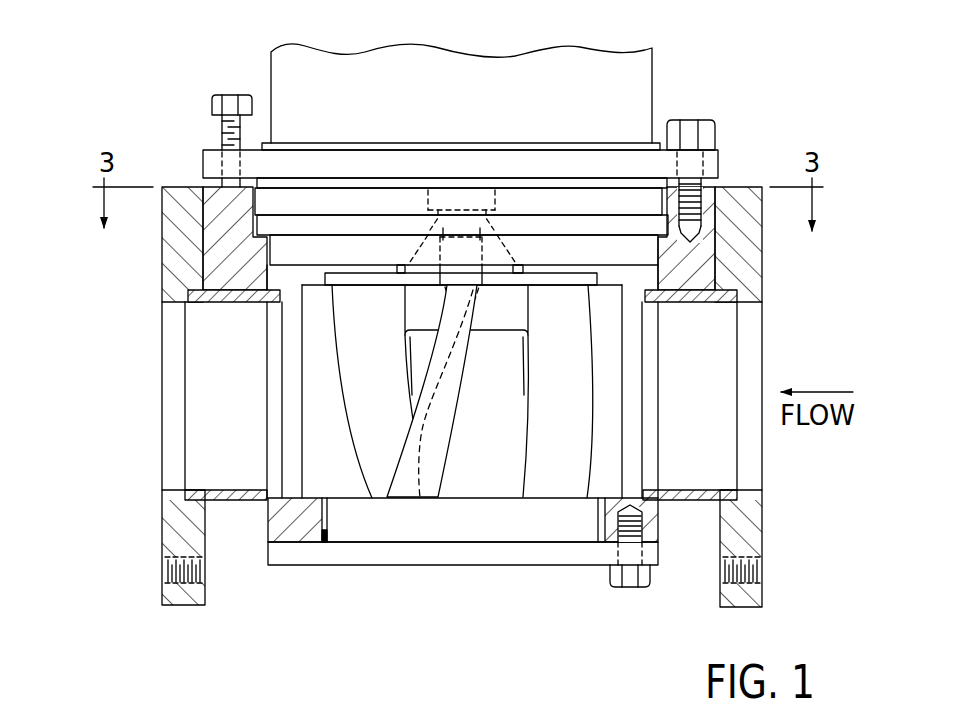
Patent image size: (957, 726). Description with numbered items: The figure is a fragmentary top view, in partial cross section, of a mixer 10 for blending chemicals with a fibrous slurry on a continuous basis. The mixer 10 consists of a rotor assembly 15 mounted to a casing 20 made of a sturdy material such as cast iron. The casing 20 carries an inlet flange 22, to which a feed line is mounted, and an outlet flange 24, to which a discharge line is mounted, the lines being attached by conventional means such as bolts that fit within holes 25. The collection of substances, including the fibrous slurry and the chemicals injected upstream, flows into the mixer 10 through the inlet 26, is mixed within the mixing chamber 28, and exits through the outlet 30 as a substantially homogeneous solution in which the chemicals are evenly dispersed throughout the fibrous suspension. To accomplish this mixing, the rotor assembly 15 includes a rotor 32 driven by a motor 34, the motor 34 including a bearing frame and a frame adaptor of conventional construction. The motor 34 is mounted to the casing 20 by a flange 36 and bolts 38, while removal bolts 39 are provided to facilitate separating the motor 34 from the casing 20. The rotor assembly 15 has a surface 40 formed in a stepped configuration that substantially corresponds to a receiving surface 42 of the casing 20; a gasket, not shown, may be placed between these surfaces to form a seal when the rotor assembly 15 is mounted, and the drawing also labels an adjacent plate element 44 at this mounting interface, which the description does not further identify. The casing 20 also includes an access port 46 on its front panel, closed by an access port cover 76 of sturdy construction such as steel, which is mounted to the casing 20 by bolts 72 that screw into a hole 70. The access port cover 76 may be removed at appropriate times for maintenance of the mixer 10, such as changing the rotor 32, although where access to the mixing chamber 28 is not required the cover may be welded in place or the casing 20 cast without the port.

The mixer 10 is at (440, 330).
The rotor assembly 15 is at (638, 126).
The casing 20 is at (194, 270).
The inlet flange 22 is at (752, 260).
The outlet flange 24 is at (172, 533).
The holes 25 is at (163, 577).
The inlet 26 is at (713, 350).
The mixing chamber 28 is at (345, 483).
The outlet 30 is at (200, 405).
The rotor 32 is at (537, 441).
The motor 34 is at (637, 70).
The flange 36 is at (212, 154).
The bolts 38 is at (705, 137).
The removal bolts 39 is at (213, 102).
The surface 40 is at (290, 221).
The receiving surface 42 is at (667, 238).
The spacer plate 44 is at (262, 224).
The access port 46 is at (323, 543).
The hole 70 is at (643, 537).
The bolts 72 is at (630, 582).
The access port cover 76 is at (405, 530).